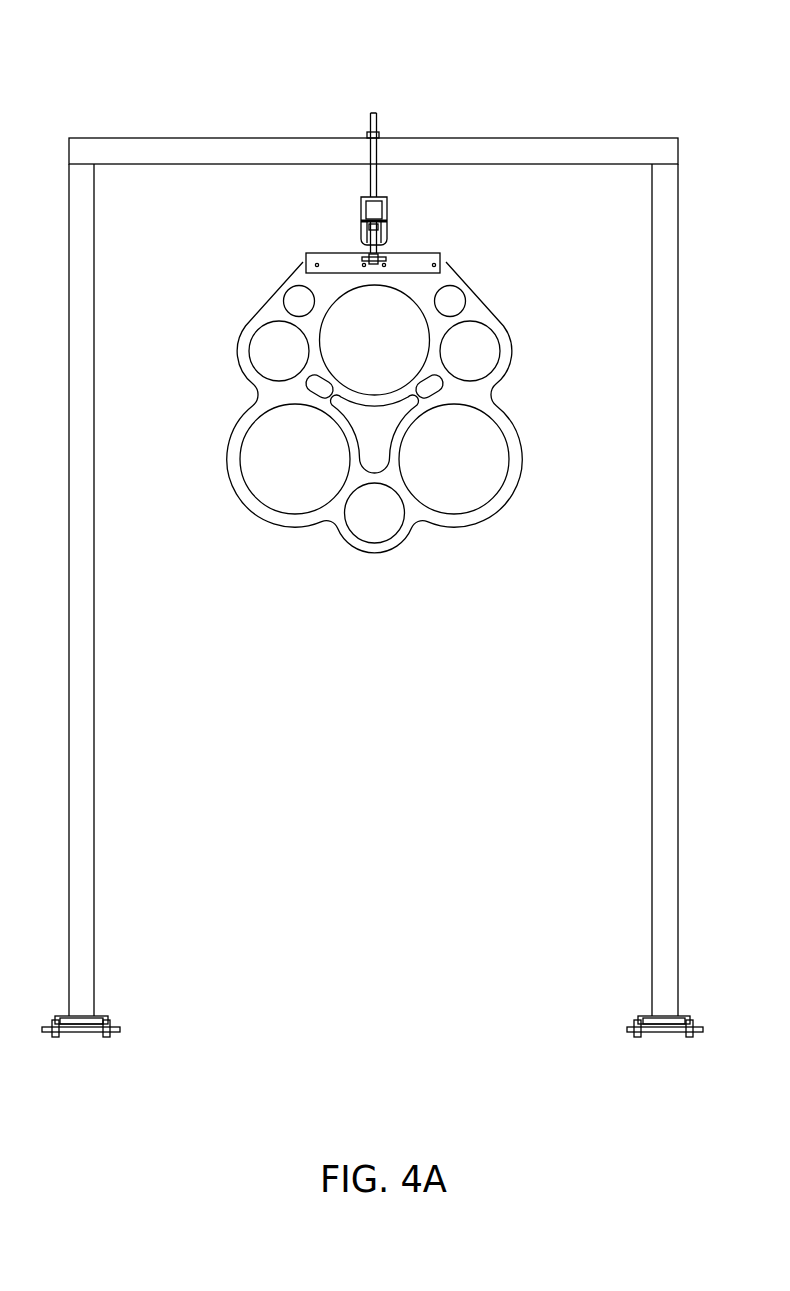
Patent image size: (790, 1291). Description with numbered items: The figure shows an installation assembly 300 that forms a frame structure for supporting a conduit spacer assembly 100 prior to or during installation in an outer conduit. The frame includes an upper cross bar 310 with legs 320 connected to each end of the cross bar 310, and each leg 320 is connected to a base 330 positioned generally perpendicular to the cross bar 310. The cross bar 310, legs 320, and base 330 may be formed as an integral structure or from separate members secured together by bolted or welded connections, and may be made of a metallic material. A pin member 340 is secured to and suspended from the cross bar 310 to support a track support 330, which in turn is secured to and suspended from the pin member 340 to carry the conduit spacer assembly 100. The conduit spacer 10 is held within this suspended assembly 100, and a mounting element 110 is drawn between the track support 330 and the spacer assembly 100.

The installation assembly 300 is at (293, 75).
The upper cross bar 310 is at (180, 165).
The legs 320 is at (94, 616).
The base 330 is at (367, 215).
The pin member 340 is at (378, 182).
The mounting plate 110 is at (415, 238).
The conduit spacer assembly 100 is at (328, 442).
The conduit spacer 10 is at (317, 540).